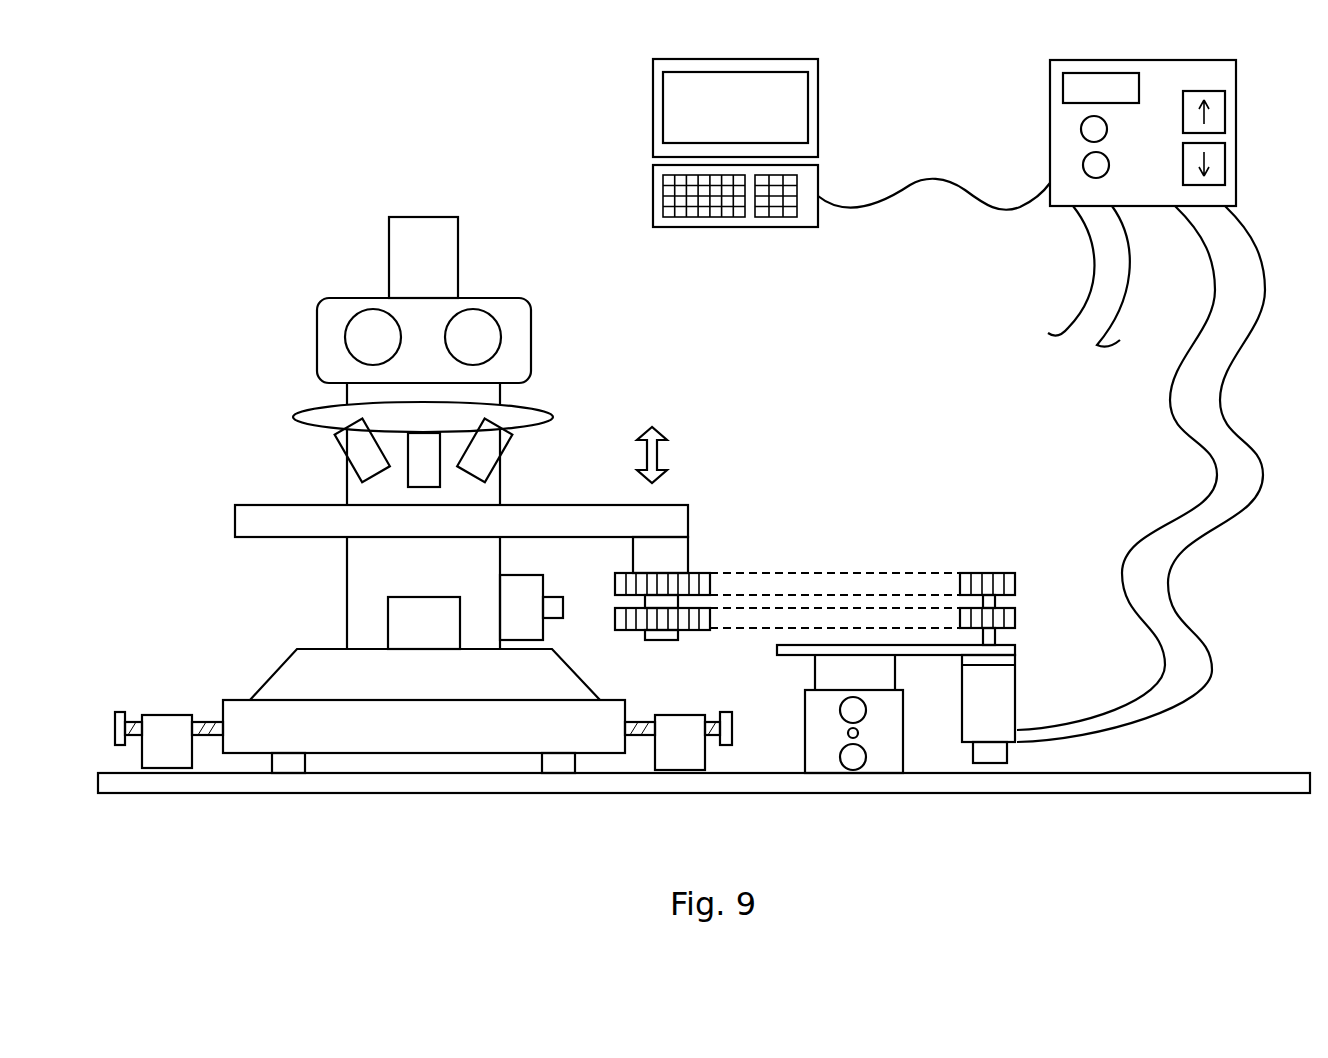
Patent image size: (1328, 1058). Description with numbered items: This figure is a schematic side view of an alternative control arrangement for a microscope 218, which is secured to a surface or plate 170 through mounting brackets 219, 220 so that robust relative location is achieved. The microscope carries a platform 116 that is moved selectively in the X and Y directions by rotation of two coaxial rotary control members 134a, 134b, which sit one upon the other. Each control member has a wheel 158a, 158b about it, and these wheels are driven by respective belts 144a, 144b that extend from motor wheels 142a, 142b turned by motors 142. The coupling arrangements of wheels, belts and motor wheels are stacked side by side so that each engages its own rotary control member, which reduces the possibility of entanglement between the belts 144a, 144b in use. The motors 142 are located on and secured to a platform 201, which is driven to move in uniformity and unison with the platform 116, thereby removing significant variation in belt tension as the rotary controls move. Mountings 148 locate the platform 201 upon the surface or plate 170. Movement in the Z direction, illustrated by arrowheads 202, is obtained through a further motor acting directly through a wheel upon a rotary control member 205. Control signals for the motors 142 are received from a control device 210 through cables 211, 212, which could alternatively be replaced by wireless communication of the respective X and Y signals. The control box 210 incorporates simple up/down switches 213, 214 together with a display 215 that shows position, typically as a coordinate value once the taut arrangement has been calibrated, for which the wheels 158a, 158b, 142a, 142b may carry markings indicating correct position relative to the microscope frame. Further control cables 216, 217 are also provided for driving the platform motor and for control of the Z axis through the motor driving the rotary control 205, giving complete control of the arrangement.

The platform 116 is at (297, 538).
The rotary control member 134a is at (690, 555).
The rotary control member 134b is at (662, 640).
The motor 142 is at (1018, 678).
The motor wheel 142a is at (978, 573).
The motor wheel 142b is at (1018, 616).
The belt 144a is at (885, 583).
The belt 144b is at (752, 627).
The mounting 148 is at (886, 765).
The wheel 158a is at (617, 583).
The wheel 158b is at (613, 622).
The surface or plate 170 is at (472, 790).
The platform 201 is at (920, 657).
The arrowheads 202 is at (660, 452).
The rotary control member 205 is at (563, 618).
The control device 210 is at (1237, 138).
The cable 211 is at (1170, 405).
The cable 212 is at (1222, 393).
The up/down switch 213 is at (1225, 98).
The up/down switch 214 is at (1218, 165).
The display 215 is at (1063, 90).
The control cable 216 is at (1098, 263).
The control cable 217 is at (1132, 303).
The microscope 218 is at (565, 345).
The mounting bracket 219 is at (682, 758).
The mounting bracket 220 is at (165, 765).